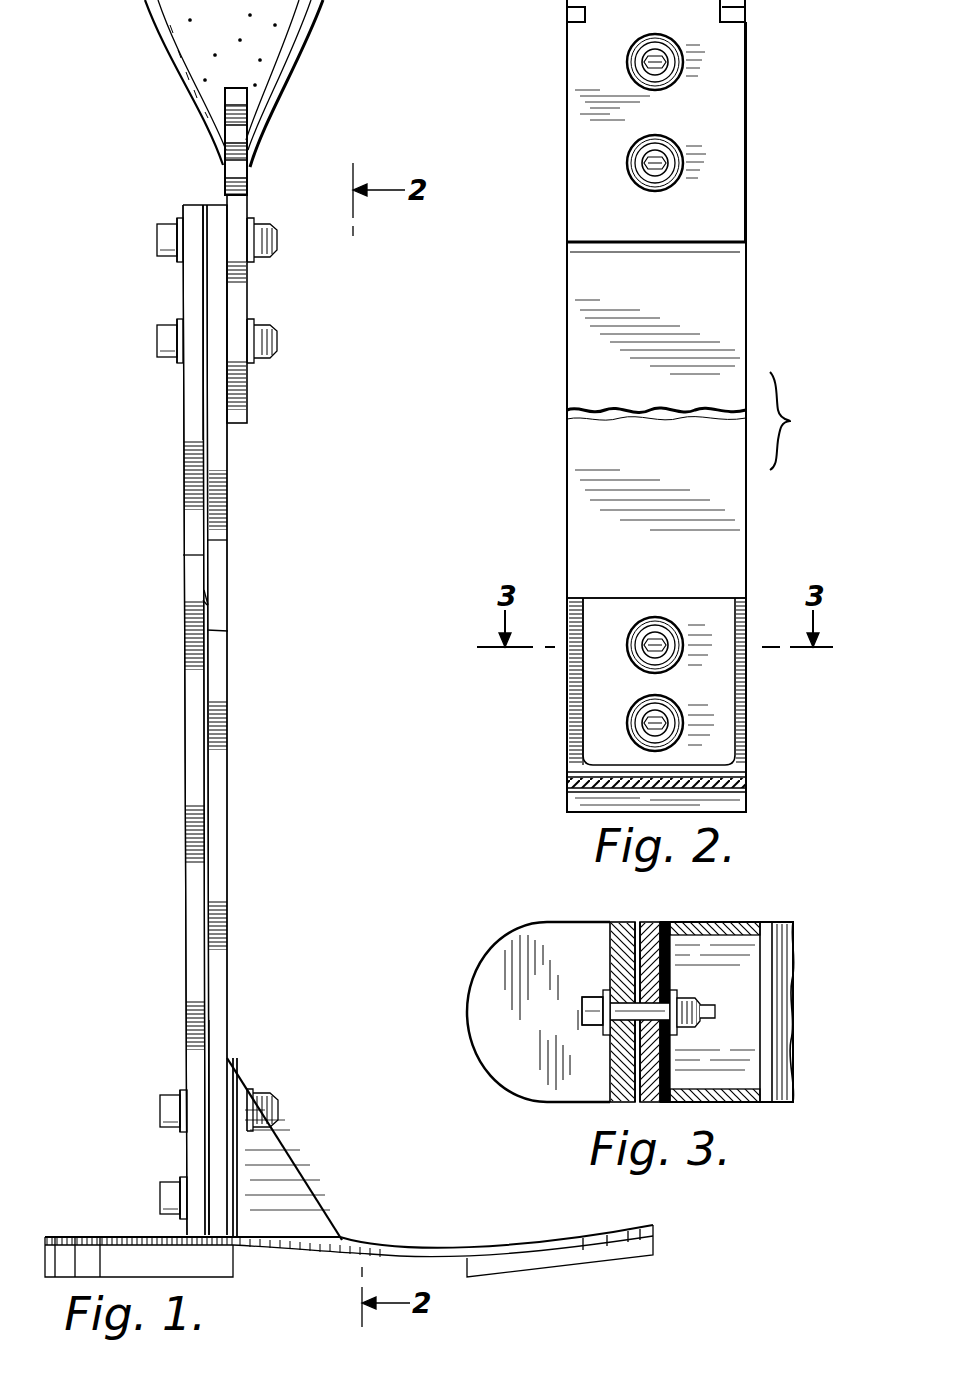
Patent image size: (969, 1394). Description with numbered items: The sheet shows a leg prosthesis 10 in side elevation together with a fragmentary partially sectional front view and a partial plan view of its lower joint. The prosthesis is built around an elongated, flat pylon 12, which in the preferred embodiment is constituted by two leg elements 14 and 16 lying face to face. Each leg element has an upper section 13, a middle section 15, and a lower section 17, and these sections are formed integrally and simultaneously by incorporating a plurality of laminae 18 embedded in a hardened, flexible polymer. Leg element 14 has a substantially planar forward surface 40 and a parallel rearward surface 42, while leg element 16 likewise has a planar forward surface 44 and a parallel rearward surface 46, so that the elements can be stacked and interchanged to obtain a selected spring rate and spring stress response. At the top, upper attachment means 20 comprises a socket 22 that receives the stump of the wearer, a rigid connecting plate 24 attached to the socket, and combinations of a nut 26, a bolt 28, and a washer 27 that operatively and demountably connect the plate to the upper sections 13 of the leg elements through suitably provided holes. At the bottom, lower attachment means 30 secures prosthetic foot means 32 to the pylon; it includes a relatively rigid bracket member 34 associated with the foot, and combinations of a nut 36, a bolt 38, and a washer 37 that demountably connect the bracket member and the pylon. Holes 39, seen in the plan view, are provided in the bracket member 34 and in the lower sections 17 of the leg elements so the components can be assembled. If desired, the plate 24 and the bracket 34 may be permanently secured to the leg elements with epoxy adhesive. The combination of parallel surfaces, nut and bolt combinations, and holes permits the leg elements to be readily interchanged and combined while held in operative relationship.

In FIG. 1, the leg prosthesis 10 is at (166, 677).
In FIG. 1, the pylon 12 is at (256, 718).
In FIG. 2, the pylon 12 is at (553, 358).
In FIG. 1, the upper sections 13 is at (233, 438).
In FIG. 2, the upper sections 13 is at (607, 262).
In FIG. 1, the leg element 14 is at (228, 801).
In FIG. 2, the leg element 14 is at (747, 358).
In FIG. 3, the leg element 14 is at (653, 1103).
In FIG. 1, the middle sections 15 is at (229, 661).
In FIG. 1, the leg element 16 is at (184, 800).
In FIG. 3, the leg element 16 is at (620, 1103).
In FIG. 1, the lower sections 17 is at (218, 1040).
In FIG. 2, the lower sections 17 is at (717, 578).
In FIG. 3, the laminae 18 is at (650, 922).
In FIG. 1, the upper attachment means 20 is at (272, 300).
In FIG. 2, the upper attachment means 20 is at (763, 162).
In FIG. 1, the socket 22 is at (322, 40).
In FIG. 1, the rigid connecting plate 24 is at (249, 165).
In FIG. 2, the rigid connecting plate 24 is at (746, 62).
In FIG. 1, the nut 26 is at (157, 240).
In FIG. 1, the washer 27 is at (175, 230).
In FIG. 2, the washer 27 is at (627, 62).
In FIG. 1, the bolt 28 is at (278, 240).
In FIG. 2, the bolt 28 is at (630, 72).
In FIG. 1, the lower attachment means 30 is at (330, 1190).
In FIG. 2, the lower attachment means 30 is at (763, 722).
In FIG. 1, the prosthetic foot means 32 is at (377, 1250).
In FIG. 2, the prosthetic foot means 32 is at (748, 780).
In FIG. 3, the prosthetic foot means 32 is at (537, 1087).
In FIG. 1, the bracket member 34 is at (292, 1160).
In FIG. 2, the bracket member 34 is at (746, 672).
In FIG. 3, the bracket member 34 is at (720, 922).
In FIG. 1, the nut 36 is at (162, 1102).
In FIG. 3, the nut 36 is at (557, 1038).
In FIG. 1, the washer 37 is at (180, 1094).
In FIG. 2, the washer 37 is at (628, 640).
In FIG. 3, the washer 37 is at (600, 997).
In FIG. 1, the bolt 38 is at (280, 1102).
In FIG. 2, the bolt 38 is at (640, 662).
In FIG. 3, the bolt 38 is at (702, 1017).
In FIG. 3, the holes 39 is at (713, 990).
In FIG. 1, the forward surface 40 is at (228, 597).
In FIG. 2, the forward surface 40 is at (593, 433).
In FIG. 1, the rearward surface 42 is at (207, 605).
In FIG. 1, the forward surface 44 is at (208, 540).
In FIG. 1, the rearward surface 46 is at (184, 555).